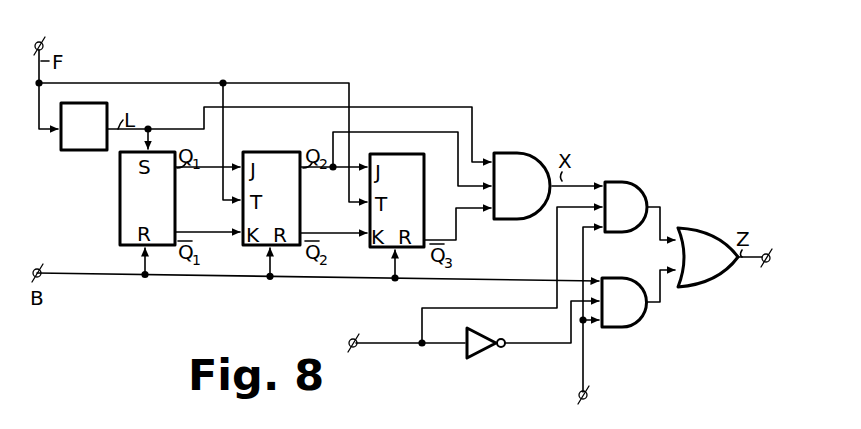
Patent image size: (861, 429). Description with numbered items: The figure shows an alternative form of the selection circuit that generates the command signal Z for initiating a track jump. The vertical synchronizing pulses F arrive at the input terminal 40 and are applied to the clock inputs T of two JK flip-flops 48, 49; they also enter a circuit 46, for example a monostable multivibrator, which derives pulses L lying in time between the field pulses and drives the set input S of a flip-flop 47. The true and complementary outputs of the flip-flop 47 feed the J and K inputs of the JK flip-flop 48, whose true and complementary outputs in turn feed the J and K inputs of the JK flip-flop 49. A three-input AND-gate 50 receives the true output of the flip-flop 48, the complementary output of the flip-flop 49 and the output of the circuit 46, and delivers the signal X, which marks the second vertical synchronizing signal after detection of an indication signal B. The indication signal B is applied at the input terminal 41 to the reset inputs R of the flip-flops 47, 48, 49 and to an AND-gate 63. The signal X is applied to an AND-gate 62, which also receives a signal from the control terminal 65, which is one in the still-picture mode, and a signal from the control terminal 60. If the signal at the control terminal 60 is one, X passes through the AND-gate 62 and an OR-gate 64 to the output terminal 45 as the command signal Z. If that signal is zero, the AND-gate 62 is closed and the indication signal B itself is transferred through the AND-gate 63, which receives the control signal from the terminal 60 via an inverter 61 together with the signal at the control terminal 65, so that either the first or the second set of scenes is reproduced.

The input terminal 40 is at (45, 40).
The input terminal 41 is at (40, 268).
The output terminal 45 is at (764, 265).
The circuit 46 is at (90, 150).
The flip-flop 47 is at (131, 246).
The JK flip-flop 48 is at (254, 246).
The JK flip-flop 49 is at (378, 248).
The AND-gate 50 is at (508, 152).
The control terminal 60 is at (352, 350).
The inverter 61 is at (478, 357).
The AND-gate 62 is at (616, 181).
The AND-gate 63 is at (634, 328).
The OR-gate 64 is at (705, 230).
The control terminal 65 is at (589, 392).